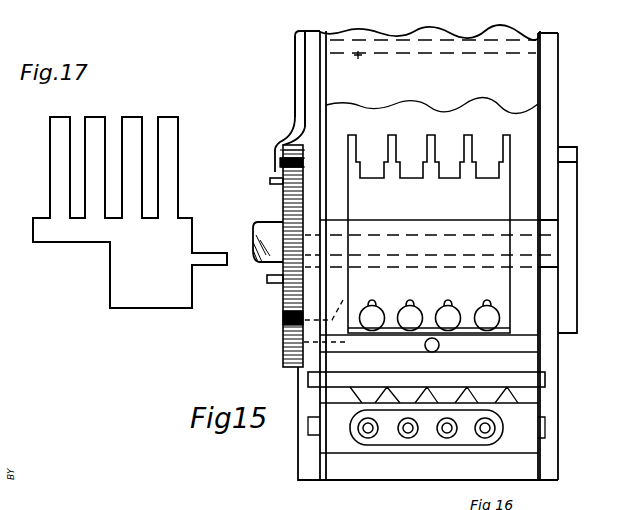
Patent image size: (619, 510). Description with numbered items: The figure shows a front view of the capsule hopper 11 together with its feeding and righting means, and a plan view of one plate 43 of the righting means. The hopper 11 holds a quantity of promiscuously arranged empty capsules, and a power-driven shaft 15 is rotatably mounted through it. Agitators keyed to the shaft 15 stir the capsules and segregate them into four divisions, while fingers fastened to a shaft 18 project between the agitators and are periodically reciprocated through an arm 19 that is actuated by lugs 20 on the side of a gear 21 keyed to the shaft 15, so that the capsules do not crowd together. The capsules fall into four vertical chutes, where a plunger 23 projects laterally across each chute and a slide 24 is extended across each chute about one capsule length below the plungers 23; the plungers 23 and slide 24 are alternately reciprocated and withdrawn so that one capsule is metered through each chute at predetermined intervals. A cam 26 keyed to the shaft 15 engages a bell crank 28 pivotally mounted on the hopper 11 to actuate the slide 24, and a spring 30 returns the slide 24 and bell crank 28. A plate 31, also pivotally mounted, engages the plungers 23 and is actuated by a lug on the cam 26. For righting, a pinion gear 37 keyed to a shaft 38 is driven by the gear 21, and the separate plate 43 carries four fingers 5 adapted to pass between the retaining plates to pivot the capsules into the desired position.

In FIG. 17, the fingers 5 is at (90, 118).
In FIG. 17, the plate 43 is at (138, 306).
In FIG. 15, the capsule hopper 11 is at (556, 77).
In FIG. 15, the shaft 15 is at (258, 233).
In FIG. 15, the shaft 18 is at (361, 60).
In FIG. 15, the arm 19 is at (295, 92).
In FIG. 15, the lugs 20 is at (270, 182).
In FIG. 15, the gear 21 is at (268, 297).
In FIG. 15, the plunger 23 is at (498, 318).
In FIG. 15, the slide 24 is at (540, 380).
In FIG. 15, the cam 26 is at (578, 203).
In FIG. 15, the bell crank 28 is at (527, 343).
In FIG. 15, the spring 30 is at (440, 345).
In FIG. 15, the plate 31 is at (439, 234).
In FIG. 15, the pinion gear 37 is at (287, 367).
In FIG. 15, the shaft 38 is at (343, 300).